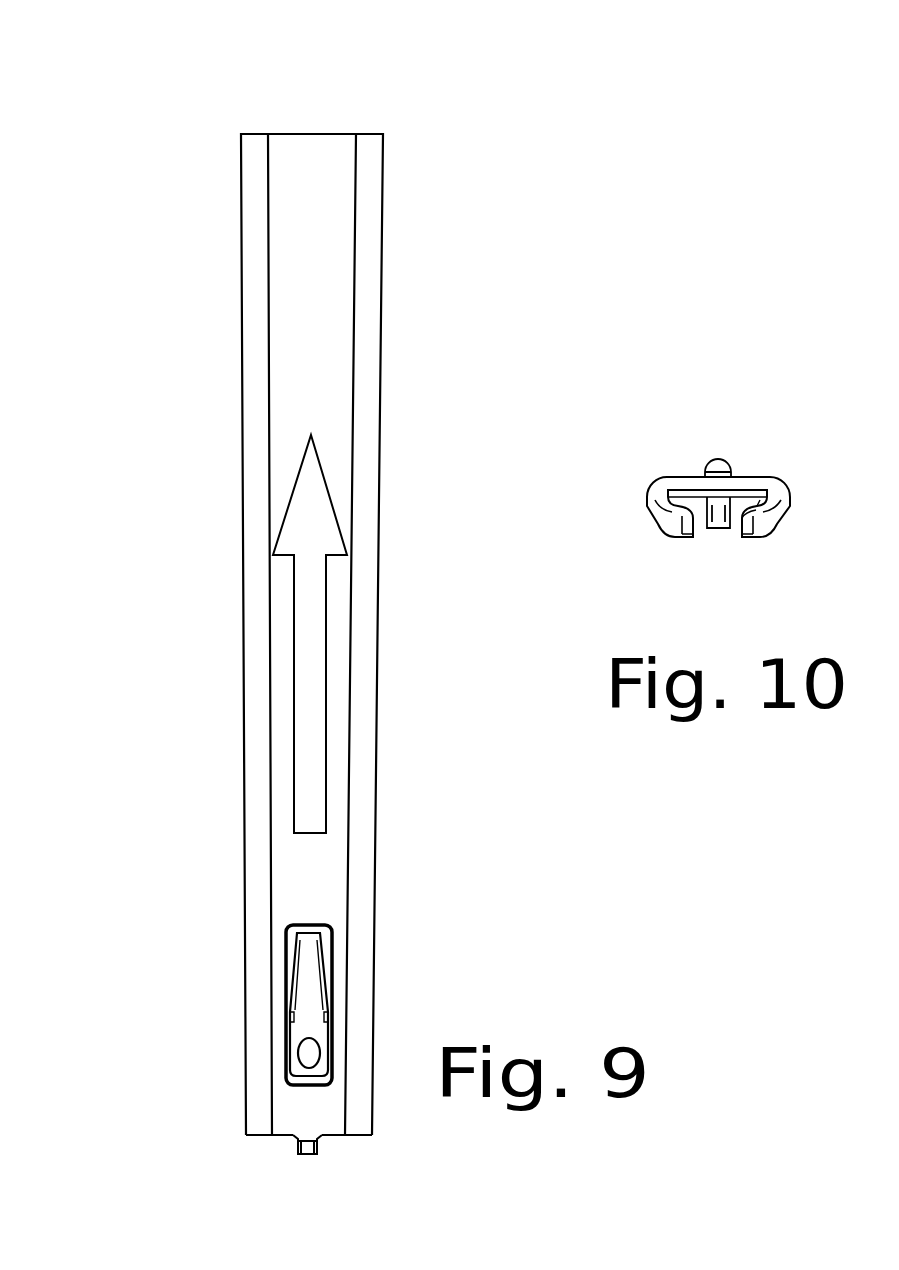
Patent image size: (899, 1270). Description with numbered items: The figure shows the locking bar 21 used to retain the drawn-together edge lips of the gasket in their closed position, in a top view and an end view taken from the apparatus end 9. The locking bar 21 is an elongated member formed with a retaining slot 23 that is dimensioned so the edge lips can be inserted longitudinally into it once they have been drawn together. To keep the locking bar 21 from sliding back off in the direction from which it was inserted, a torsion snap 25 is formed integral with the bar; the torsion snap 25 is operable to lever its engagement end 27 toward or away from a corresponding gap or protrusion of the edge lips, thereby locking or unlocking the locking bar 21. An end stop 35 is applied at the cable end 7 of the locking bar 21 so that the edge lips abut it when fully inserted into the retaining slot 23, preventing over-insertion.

In FIG. 9, the cable end 7 is at (278, 1183).
In FIG. 9, the apparatus end 9 is at (285, 81).
In FIG. 10, the apparatus end 9 is at (752, 483).
In FIG. 9, the locking bar 21 is at (192, 372).
In FIG. 10, the locking bar 21 is at (657, 458).
In FIG. 10, the retaining slot 23 is at (745, 510).
In FIG. 9, the torsion snap 25 is at (310, 1025).
In FIG. 10, the torsion snap 25 is at (718, 466).
In FIG. 9, the engagement end 27 is at (310, 945).
In FIG. 10, the engagement end 27 is at (713, 527).
In FIG. 9, the end stop 35 is at (308, 1152).